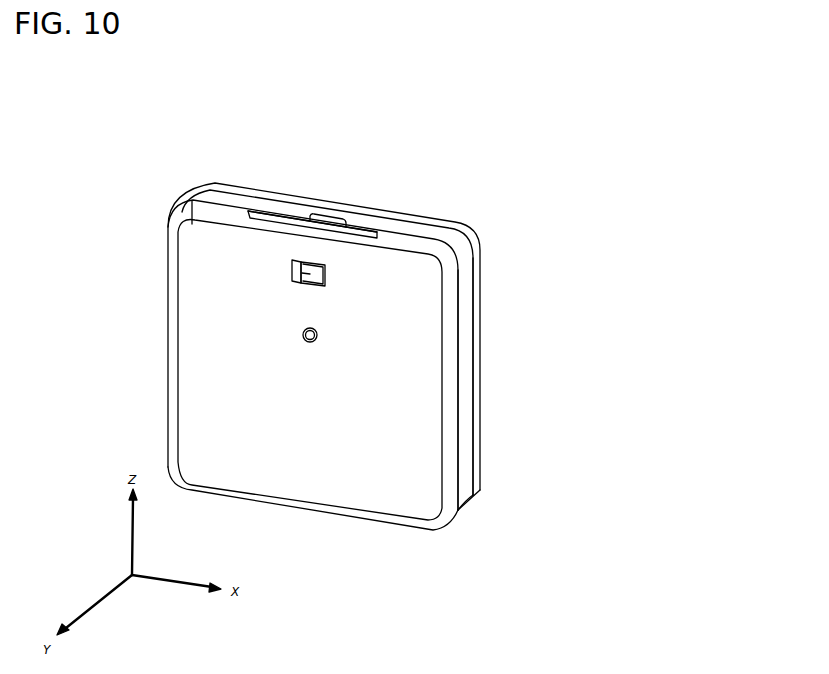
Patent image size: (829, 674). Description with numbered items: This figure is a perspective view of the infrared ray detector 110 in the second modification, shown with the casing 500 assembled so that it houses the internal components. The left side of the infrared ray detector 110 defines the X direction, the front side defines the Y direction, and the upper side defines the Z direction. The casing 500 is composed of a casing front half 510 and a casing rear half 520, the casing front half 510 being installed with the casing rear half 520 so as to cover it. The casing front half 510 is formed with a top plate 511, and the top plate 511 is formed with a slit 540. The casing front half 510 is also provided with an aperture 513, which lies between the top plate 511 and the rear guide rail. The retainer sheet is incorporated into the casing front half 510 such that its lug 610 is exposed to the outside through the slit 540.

The infrared ray detector 110 is at (188, 134).
The casing 500 is at (458, 242).
The casing front half 510 is at (448, 338).
The top plate 511 is at (220, 197).
The aperture 513 is at (291, 271).
The casing rear half 520 is at (480, 377).
The slit 540 is at (272, 214).
The lug 610 is at (333, 214).